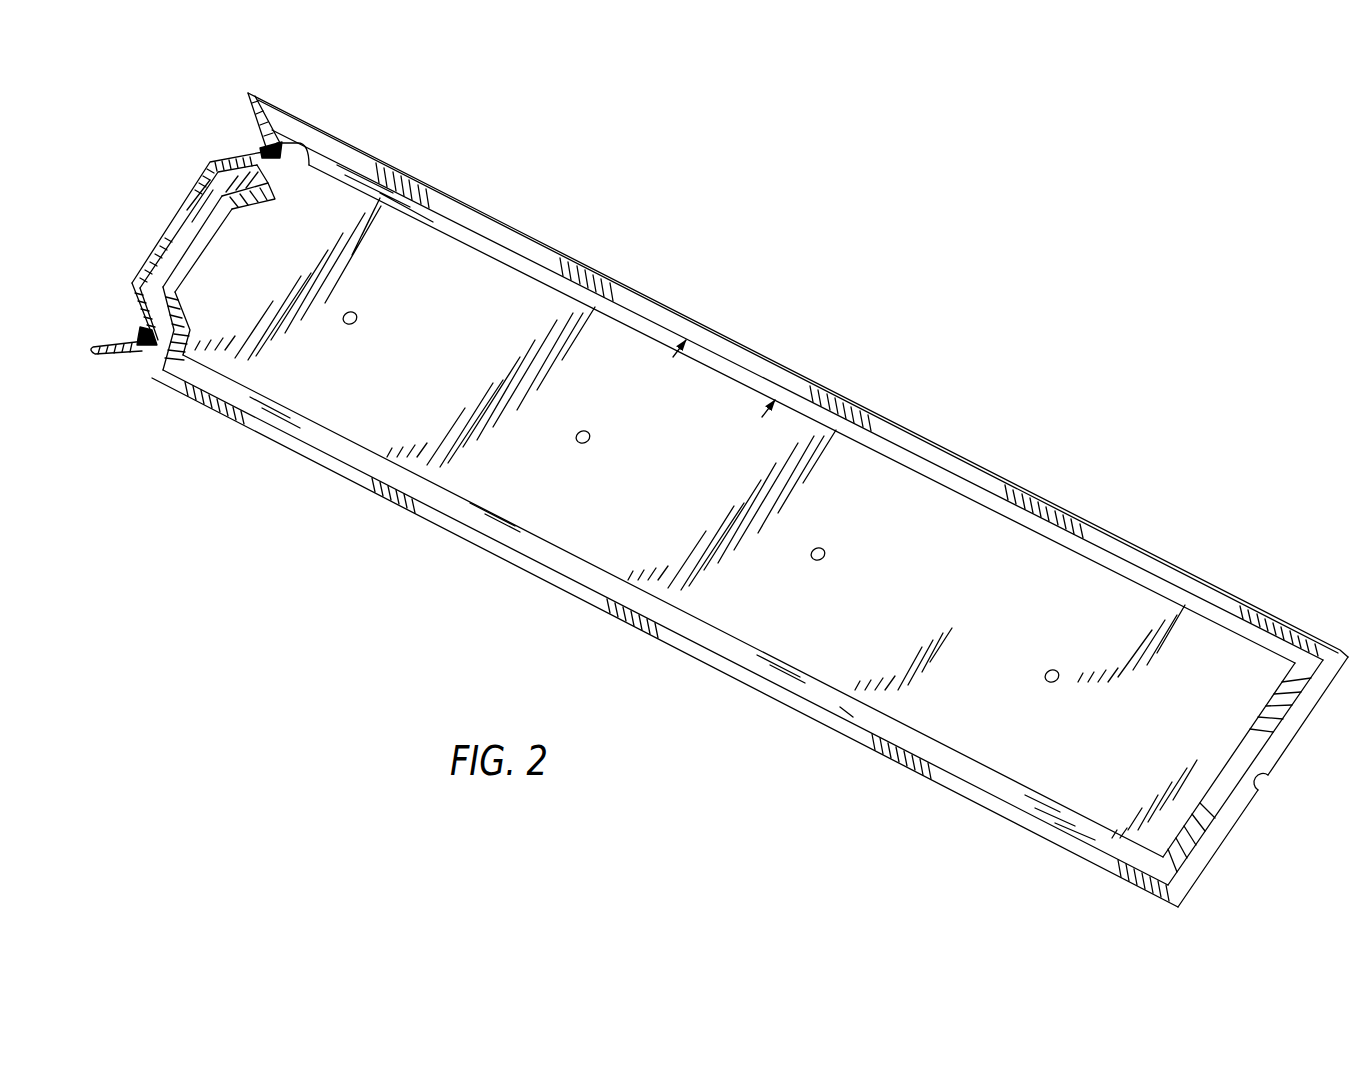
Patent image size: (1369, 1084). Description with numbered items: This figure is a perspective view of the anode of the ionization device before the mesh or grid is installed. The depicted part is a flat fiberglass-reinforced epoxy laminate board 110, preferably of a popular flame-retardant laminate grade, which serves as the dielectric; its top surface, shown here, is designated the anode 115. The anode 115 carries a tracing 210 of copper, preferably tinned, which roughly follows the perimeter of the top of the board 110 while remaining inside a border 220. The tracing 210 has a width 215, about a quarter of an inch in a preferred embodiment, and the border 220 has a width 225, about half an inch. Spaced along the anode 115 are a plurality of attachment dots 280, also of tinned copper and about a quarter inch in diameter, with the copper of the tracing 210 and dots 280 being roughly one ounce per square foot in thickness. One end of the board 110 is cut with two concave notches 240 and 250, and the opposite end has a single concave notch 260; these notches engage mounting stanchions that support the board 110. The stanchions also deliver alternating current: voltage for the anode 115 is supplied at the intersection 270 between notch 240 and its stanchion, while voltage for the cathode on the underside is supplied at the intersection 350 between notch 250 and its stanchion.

The fiberglass-reinforced epoxy laminate board 110 is at (1113, 525).
The anode 115 is at (1200, 588).
The tracing 210 is at (892, 450).
The width of tracing 215 is at (783, 385).
The border 220 is at (707, 335).
The width of border 225 is at (699, 320).
The concave notch 240 is at (250, 142).
The concave notch 250 is at (128, 330).
The concave notch 260 is at (1265, 785).
The intersection 270 is at (285, 155).
The attachment dots 280 is at (352, 328).
The intersection 350 is at (163, 348).